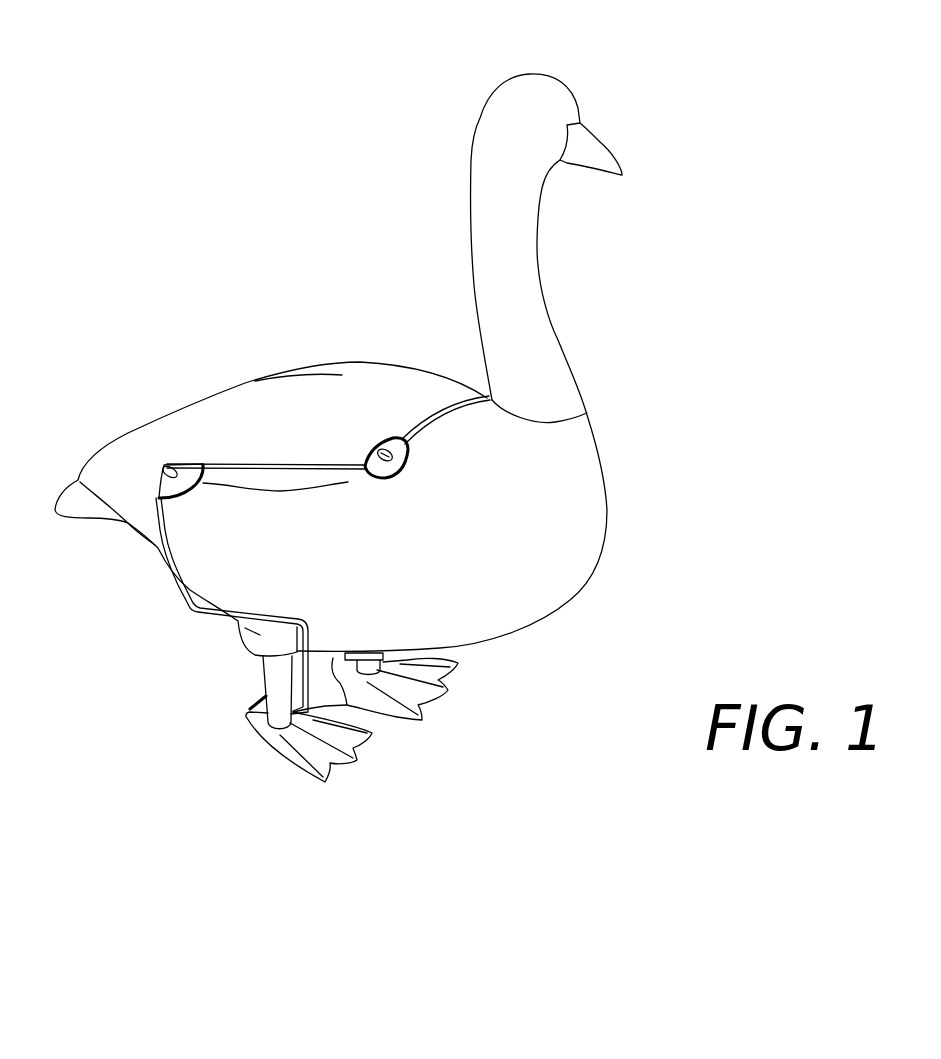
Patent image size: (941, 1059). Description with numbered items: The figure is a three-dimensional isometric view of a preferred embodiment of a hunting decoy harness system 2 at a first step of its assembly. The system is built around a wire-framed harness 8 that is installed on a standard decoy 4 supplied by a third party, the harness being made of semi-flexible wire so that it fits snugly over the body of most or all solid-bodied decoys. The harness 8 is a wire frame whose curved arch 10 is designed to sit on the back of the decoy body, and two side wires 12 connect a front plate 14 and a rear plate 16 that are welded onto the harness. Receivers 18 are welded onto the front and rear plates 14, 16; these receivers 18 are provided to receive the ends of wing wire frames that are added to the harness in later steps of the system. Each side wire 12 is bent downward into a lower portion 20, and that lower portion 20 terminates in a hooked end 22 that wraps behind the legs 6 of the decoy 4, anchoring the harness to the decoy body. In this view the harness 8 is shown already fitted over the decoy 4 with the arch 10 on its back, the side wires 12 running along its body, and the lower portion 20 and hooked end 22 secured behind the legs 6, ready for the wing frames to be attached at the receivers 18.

The hunting decoy harness system 2 is at (758, 103).
The decoy 4 is at (237, 383).
The legs 6 is at (353, 698).
The wire-framed harness 8 is at (370, 407).
The curved arch 10 is at (444, 406).
The side wires 12 is at (302, 463).
The front plate 14 is at (405, 469).
The rear plate 16 is at (162, 475).
The receivers 18 is at (167, 465).
The lower portion 20 is at (190, 604).
The hooked end 22 is at (260, 699).